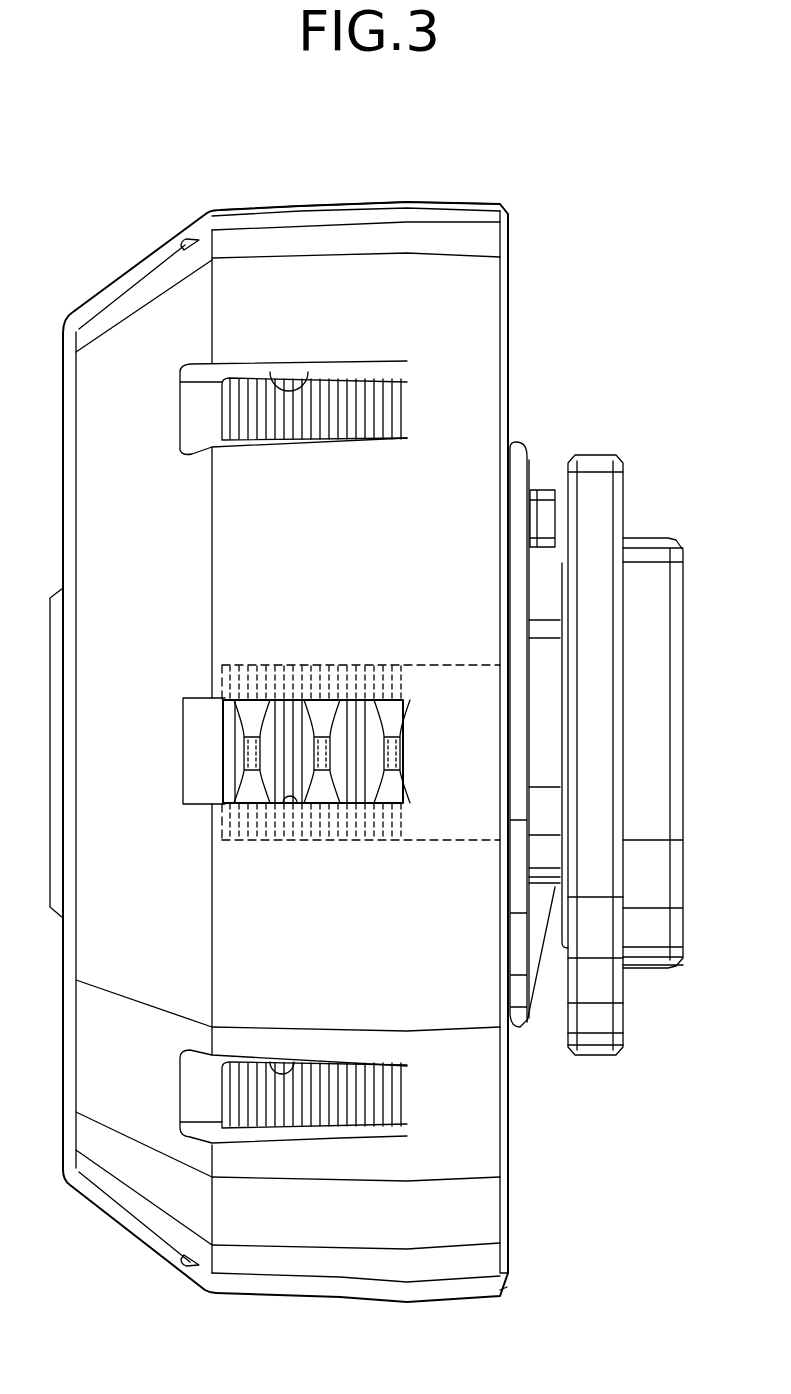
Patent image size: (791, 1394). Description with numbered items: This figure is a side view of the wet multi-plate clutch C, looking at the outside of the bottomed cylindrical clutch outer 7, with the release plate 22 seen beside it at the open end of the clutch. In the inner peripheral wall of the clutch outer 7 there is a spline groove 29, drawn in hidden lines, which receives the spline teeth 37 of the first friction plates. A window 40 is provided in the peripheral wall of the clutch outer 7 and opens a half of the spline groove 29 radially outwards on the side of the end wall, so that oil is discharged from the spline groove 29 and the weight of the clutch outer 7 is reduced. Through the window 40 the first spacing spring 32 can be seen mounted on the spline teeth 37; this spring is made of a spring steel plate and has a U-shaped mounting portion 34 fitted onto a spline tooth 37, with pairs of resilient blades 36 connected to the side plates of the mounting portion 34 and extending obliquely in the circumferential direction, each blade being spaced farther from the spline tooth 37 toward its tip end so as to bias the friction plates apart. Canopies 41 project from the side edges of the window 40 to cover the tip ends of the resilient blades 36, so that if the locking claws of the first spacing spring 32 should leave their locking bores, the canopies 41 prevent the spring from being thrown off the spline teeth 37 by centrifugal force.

The wet multi-plate clutch C is at (348, 205).
The clutch outer 7 is at (453, 205).
The release plate 22 is at (590, 465).
The spline groove 29 is at (425, 665).
The first spacing spring 32 is at (242, 748).
The mounting portion 34 is at (243, 755).
The resilient blades 36 is at (257, 710).
The spline teeth 37 is at (345, 698).
The window 40 is at (300, 375).
The canopies 41 is at (357, 680).